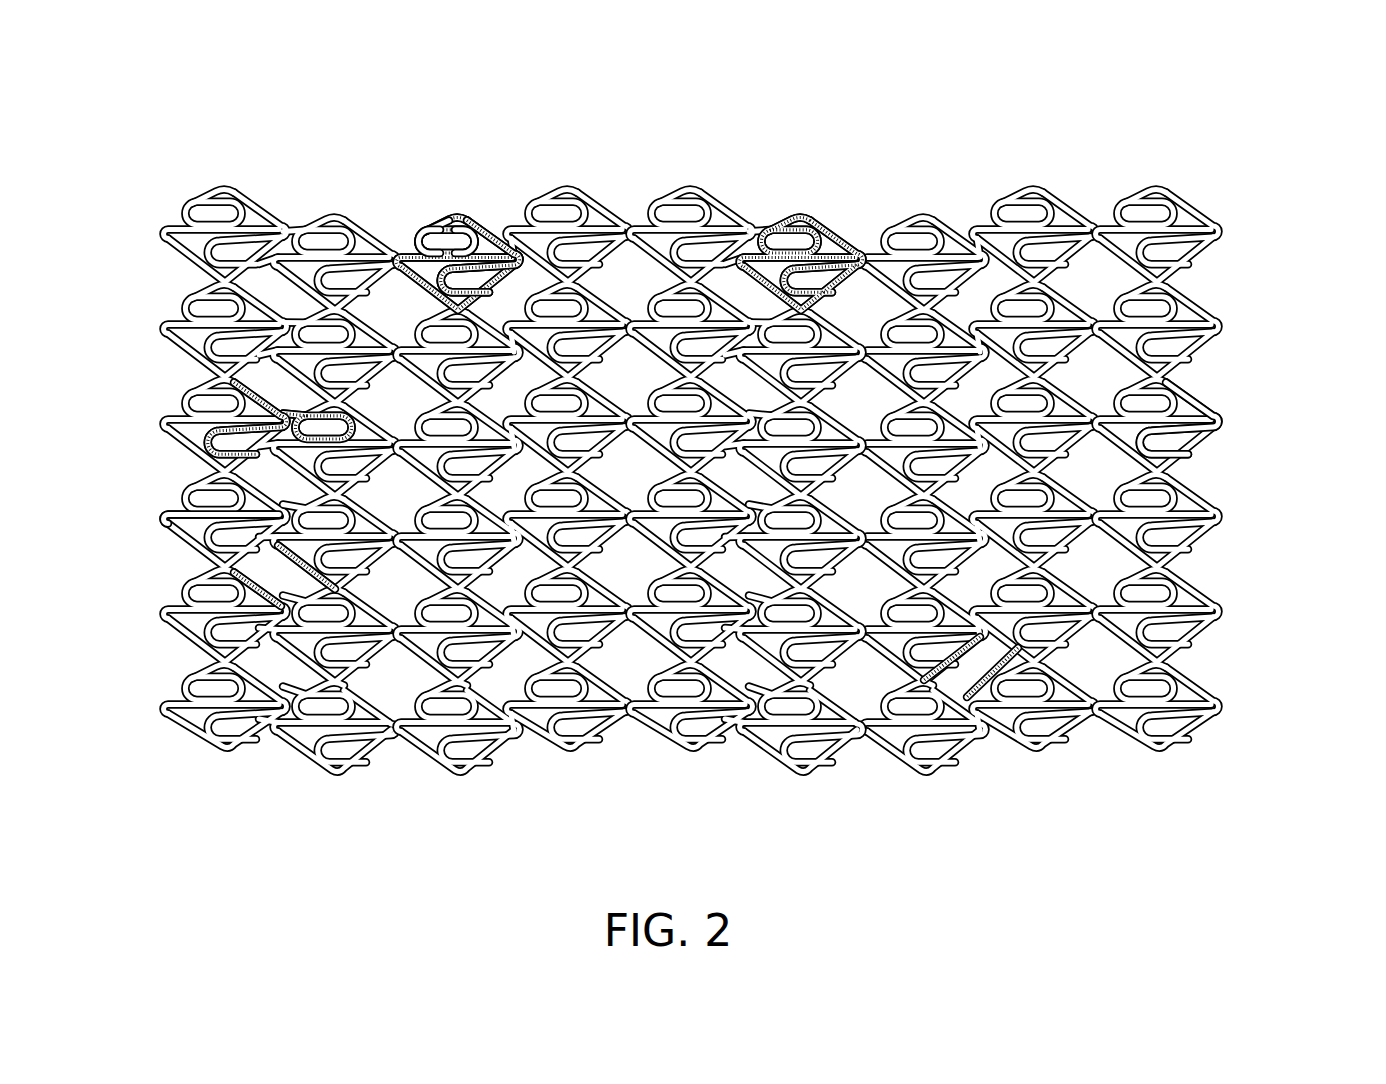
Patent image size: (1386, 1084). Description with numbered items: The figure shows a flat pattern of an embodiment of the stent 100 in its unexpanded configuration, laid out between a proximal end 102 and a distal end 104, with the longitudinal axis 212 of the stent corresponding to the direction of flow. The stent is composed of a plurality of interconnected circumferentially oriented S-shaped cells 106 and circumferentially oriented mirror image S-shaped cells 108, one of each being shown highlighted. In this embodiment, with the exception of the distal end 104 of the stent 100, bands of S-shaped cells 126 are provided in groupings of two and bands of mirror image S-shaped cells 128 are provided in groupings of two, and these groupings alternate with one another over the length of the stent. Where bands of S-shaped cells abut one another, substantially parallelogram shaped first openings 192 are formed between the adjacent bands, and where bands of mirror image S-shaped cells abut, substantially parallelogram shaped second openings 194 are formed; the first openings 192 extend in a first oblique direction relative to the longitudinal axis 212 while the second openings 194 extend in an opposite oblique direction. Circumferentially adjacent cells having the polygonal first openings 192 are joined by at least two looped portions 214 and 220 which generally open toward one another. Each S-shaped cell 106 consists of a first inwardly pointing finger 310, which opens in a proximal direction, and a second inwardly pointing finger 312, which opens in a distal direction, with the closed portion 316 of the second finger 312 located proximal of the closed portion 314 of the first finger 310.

The stent 100 is at (698, 465).
The proximal end 102 is at (150, 493).
The distal end 104 is at (1258, 413).
The S-shaped cell 106 is at (457, 212).
The mirror image S-shaped cell 108 is at (782, 208).
The band of S-shaped cells 126 is at (407, 795).
The band of mirror image S-shaped cells 128 is at (280, 795).
The first opening 192 is at (998, 692).
The second opening 194 is at (236, 590).
The longitudinal axis 212 is at (1312, 511).
The looped portion 214 is at (205, 437).
The looped portion 220 is at (222, 407).
The first inwardly pointing finger 310 is at (415, 234).
The second inwardly pointing finger 312 is at (480, 228).
The closed portion of first finger 314 is at (490, 290).
The closed portion of second finger 316 is at (433, 233).